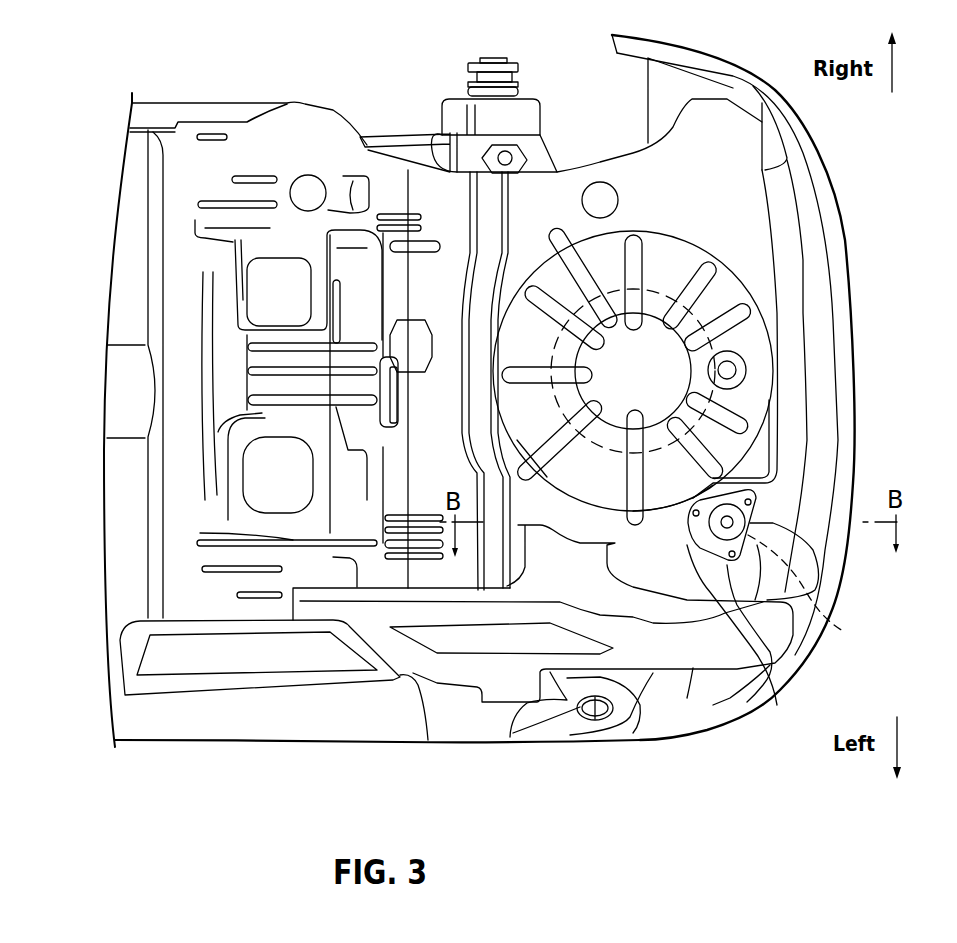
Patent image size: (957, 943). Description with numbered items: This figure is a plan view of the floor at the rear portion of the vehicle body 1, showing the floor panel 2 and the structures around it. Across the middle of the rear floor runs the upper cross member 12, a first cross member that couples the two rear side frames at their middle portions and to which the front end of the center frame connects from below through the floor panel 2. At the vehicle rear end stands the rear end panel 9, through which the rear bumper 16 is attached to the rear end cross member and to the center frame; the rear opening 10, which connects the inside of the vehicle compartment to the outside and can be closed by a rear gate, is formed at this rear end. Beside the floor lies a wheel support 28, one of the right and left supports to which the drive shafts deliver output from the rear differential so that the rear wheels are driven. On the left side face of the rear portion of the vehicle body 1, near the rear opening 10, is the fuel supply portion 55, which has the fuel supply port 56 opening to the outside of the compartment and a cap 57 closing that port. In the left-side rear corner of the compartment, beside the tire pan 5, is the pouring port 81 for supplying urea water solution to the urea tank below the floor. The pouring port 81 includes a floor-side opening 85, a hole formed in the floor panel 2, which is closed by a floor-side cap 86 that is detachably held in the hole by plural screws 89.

The vehicle body 1 is at (457, 743).
The floor panel 2 is at (289, 98).
The tire pan 5 is at (723, 273).
The rear end panel 9 is at (795, 373).
The rear opening 10 is at (782, 311).
The upper cross member 12 is at (467, 207).
The rear bumper 16 is at (845, 273).
The wheel support 28 is at (519, 62).
The fuel supply portion 55 is at (563, 717).
The fuel supply port 56 is at (620, 733).
The cap 57 is at (582, 712).
The pouring port 81 is at (770, 491).
The floor-side opening 85 is at (813, 589).
The floor-side cap 86 is at (818, 585).
The screws 89 is at (741, 638).